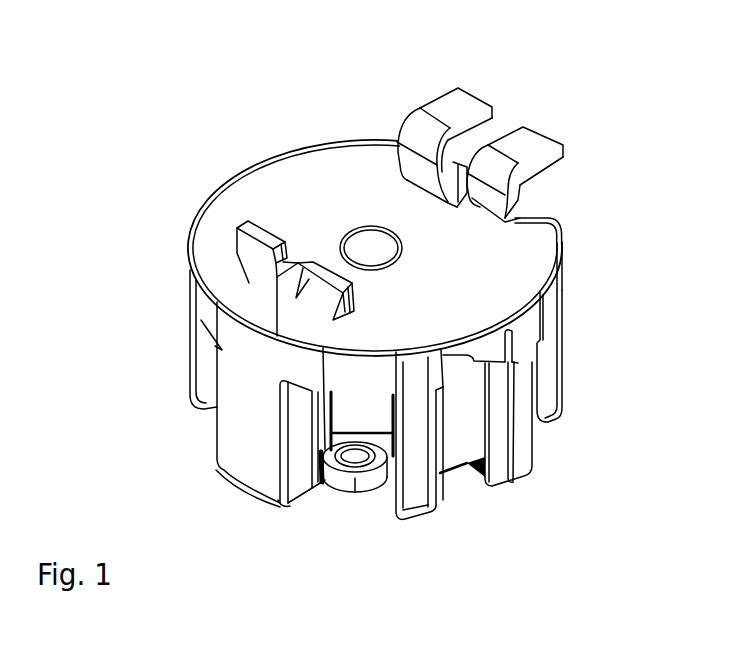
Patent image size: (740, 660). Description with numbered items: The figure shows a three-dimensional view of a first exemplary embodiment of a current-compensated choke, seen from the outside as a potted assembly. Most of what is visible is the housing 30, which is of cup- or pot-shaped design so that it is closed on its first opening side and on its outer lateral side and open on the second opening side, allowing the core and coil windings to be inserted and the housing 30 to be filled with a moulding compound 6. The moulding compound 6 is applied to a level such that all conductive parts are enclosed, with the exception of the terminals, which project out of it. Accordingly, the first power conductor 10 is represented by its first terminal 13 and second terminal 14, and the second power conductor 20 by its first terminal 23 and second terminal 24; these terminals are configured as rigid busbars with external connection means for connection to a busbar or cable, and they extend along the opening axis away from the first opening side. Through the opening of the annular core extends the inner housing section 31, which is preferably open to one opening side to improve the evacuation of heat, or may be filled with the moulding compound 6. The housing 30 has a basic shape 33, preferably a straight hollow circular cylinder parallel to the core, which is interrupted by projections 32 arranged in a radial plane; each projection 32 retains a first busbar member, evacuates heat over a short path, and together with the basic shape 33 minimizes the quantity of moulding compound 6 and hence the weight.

The first power conductor 10 is at (582, 113).
The moulding compound 6 is at (528, 247).
The first terminal 13 is at (354, 296).
The second terminal 14 is at (526, 147).
The second power conductor 20 is at (492, 118).
The first terminal 23 is at (260, 235).
The second terminal 24 is at (457, 101).
The housing 30 is at (563, 258).
The inner housing section 31 is at (353, 243).
The projections 32 is at (207, 373).
The basic shape 33 is at (313, 458).